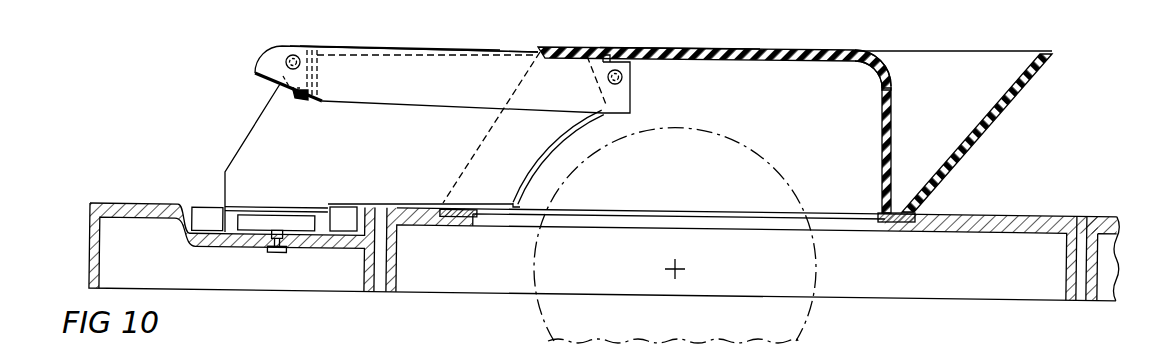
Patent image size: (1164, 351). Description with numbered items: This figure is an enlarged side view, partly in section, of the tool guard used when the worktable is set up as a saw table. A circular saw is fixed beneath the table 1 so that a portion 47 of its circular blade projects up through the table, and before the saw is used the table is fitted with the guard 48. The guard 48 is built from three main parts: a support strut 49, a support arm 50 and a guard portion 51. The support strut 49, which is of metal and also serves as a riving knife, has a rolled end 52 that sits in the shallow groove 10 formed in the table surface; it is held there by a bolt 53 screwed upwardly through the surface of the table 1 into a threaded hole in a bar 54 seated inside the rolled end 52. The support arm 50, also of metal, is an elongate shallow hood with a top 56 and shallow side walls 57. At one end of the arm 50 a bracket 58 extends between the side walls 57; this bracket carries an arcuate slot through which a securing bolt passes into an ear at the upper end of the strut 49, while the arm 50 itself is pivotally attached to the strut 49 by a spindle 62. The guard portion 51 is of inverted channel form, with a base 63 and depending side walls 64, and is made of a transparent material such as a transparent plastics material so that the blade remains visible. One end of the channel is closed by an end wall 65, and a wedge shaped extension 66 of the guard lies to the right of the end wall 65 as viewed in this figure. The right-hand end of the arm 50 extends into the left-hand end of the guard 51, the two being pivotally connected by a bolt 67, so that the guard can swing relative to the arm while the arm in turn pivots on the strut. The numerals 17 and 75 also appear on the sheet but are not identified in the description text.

The table 1 is at (1032, 207).
The shallow groove 10 is at (205, 204).
The portion of the circular blade 47 is at (796, 188).
The guard 48 is at (731, 44).
The support strut 49 is at (409, 150).
The support arm 50 is at (463, 33).
The guard portion 51 is at (870, 50).
The rolled end 52 is at (233, 225).
The bolt 53 is at (284, 250).
The bar 54 is at (258, 225).
The top 56 is at (366, 46).
The side walls 57 is at (438, 88).
The bracket 58 is at (304, 100).
The spindle 62 is at (290, 55).
The base 63 is at (689, 49).
The side walls 64 is at (818, 110).
The end wall 65 is at (891, 102).
The wedge shaped extension 66 is at (1019, 117).
The bolt 67 is at (623, 74).
The sheet annotation 17 is at (992, 341).
The sheet annotation 75 is at (1047, 341).